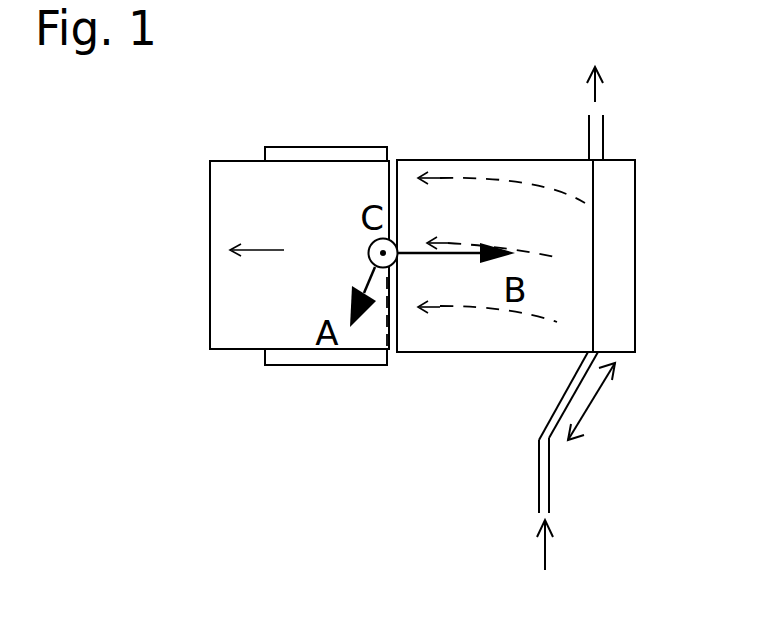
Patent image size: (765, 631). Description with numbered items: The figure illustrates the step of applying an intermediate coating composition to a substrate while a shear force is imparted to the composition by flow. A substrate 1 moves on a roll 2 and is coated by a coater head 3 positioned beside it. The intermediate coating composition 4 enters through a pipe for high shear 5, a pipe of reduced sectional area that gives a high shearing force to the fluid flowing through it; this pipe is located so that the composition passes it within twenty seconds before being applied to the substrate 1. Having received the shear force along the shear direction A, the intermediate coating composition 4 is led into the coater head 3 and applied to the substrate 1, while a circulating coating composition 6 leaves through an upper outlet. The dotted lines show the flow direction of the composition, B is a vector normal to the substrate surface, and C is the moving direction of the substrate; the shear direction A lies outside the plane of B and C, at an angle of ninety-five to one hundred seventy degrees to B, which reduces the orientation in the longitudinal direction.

The substrate 1 is at (235, 332).
The roll 2 is at (333, 358).
The coater head 3 is at (455, 333).
The intermediate coating composition 4 is at (546, 557).
The pipe for high shear 5 is at (585, 412).
The circulating coating composition 6 is at (596, 88).